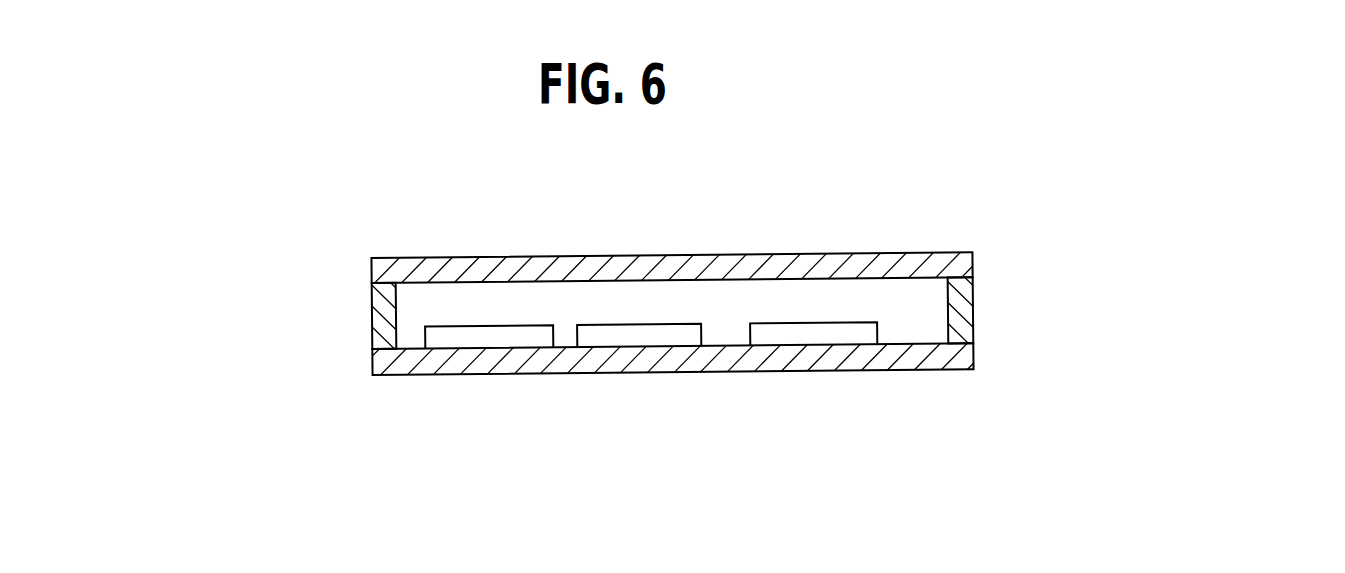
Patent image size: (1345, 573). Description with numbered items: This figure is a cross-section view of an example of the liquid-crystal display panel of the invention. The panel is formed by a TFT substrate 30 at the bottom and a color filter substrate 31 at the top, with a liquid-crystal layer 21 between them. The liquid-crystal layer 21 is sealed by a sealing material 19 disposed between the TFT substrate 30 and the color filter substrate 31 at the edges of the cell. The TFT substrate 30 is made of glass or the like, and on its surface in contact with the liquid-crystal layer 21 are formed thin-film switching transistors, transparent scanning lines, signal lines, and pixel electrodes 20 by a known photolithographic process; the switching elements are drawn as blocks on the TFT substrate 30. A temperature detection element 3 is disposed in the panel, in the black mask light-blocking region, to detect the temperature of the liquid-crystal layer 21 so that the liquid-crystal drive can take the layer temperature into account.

The temperature detection element 3 is at (793, 323).
The sealing material 19 is at (378, 302).
The pixel electrodes 20 is at (462, 350).
The liquid-crystal layer 21 is at (692, 303).
The TFT substrate 30 is at (878, 350).
The color filter substrate 31 is at (890, 268).